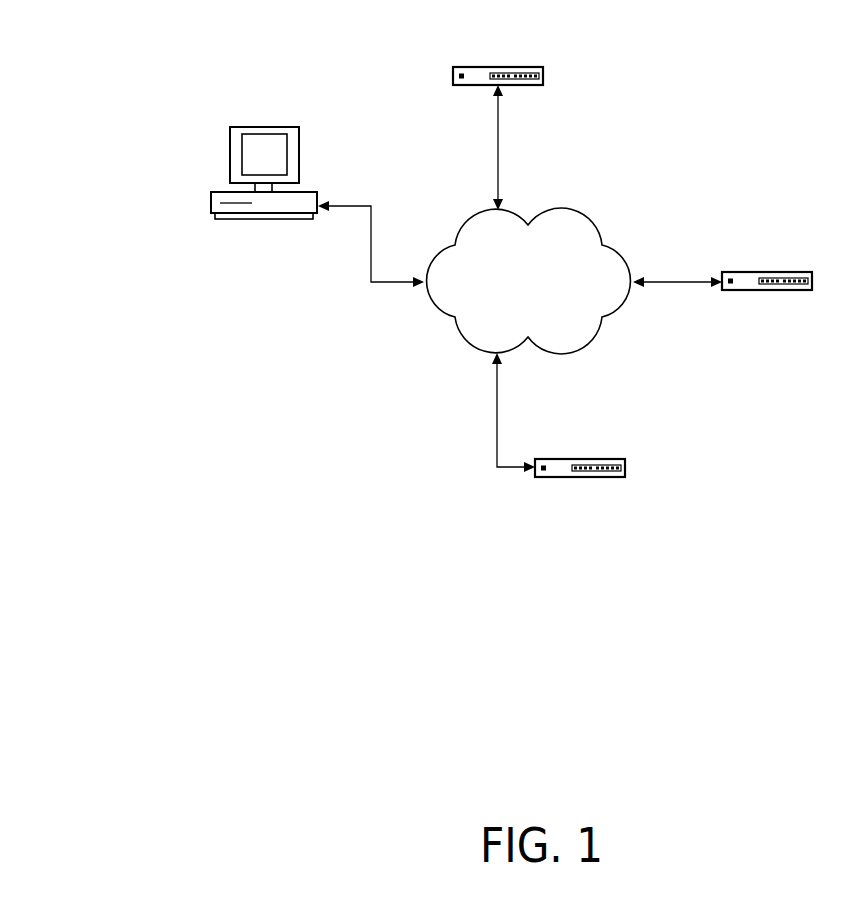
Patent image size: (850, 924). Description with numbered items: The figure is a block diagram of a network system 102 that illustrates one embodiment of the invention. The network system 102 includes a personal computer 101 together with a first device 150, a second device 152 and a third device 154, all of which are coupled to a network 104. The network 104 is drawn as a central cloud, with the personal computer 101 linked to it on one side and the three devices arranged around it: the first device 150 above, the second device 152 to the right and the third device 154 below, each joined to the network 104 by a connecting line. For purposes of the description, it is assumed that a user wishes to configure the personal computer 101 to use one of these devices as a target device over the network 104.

The personal computer 101 is at (211, 200).
The network system 102 is at (214, 576).
The network 104 is at (529, 281).
The first device 150 is at (497, 67).
The second device 152 is at (770, 272).
The third device 154 is at (577, 477).